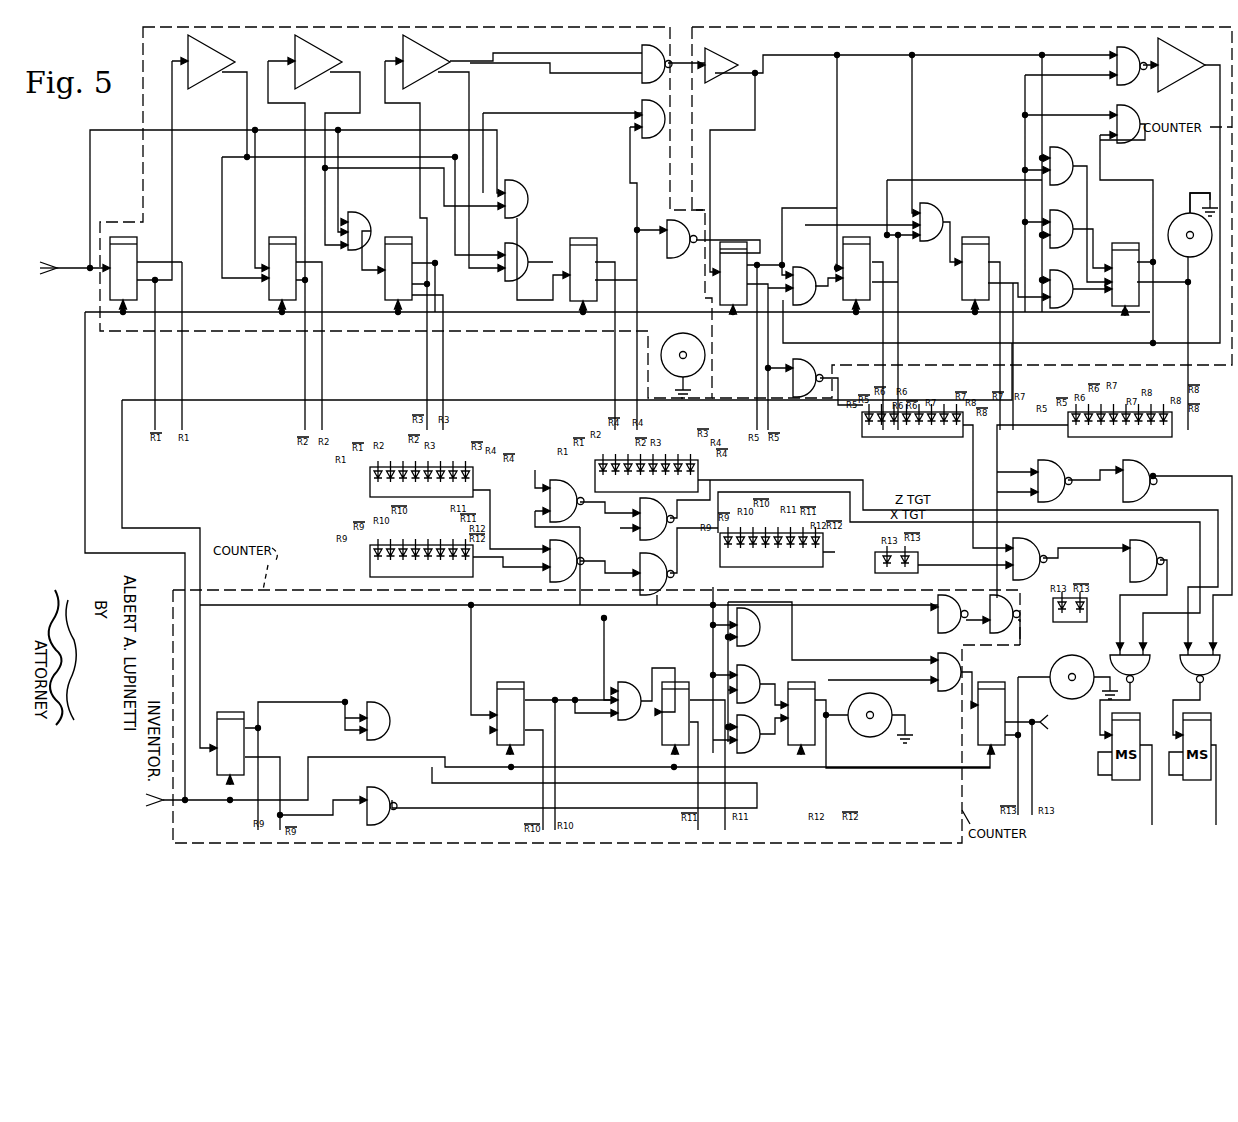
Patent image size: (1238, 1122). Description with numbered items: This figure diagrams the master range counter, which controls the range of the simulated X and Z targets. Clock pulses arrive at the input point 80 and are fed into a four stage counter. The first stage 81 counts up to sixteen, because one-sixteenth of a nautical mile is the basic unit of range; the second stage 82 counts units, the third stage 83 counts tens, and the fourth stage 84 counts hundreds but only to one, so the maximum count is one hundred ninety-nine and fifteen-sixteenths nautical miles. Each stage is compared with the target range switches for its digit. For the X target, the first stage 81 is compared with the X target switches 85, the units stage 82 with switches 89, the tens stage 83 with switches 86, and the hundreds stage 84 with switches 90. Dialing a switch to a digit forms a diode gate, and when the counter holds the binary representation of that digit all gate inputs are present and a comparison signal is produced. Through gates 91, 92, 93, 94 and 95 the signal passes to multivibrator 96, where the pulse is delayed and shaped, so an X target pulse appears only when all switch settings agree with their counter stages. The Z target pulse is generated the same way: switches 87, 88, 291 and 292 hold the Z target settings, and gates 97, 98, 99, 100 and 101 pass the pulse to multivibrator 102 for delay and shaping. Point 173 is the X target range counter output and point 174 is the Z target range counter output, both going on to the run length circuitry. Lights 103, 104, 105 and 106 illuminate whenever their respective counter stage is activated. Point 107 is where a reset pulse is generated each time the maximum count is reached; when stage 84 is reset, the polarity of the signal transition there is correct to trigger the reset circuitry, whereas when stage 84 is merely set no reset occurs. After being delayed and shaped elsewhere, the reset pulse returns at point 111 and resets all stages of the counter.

The input point 80 is at (70, 265).
The first stage of counter 81 is at (373, 325).
The second stage of counter 82 is at (968, 358).
The third stage of counter 83 is at (306, 592).
The fourth stage of counter 84 is at (981, 782).
The X target switches 85 is at (473, 476).
The X target switches 86 is at (370, 568).
The Z target switches 87 is at (695, 482).
The Z target switches 88 is at (810, 556).
The X target switches 89 is at (966, 415).
The X target switches 90 is at (908, 560).
The gate 91 is at (572, 552).
The gate 92 is at (640, 574).
The gate 93 is at (1110, 658).
The gate 94 is at (1032, 550).
The gate 95 is at (1130, 560).
The multivibrator 96 is at (1130, 722).
The gate 97 is at (549, 494).
The gate 98 is at (640, 522).
The gate 99 is at (1038, 474).
The gate 100 is at (1140, 472).
The gate 101 is at (1186, 658).
The multivibrator 102 is at (1200, 722).
The light 103 is at (1062, 670).
The light 104 is at (866, 700).
The light 105 is at (1180, 221).
The light 106 is at (693, 345).
The reset pulse generation point 107 is at (1048, 725).
The reset input point 111 is at (162, 800).
The X target range counter output 173 is at (1152, 816).
The Z target range counter output 174 is at (1216, 805).
The Z target switches 291 is at (1164, 422).
The Z target switches 292 is at (1090, 611).